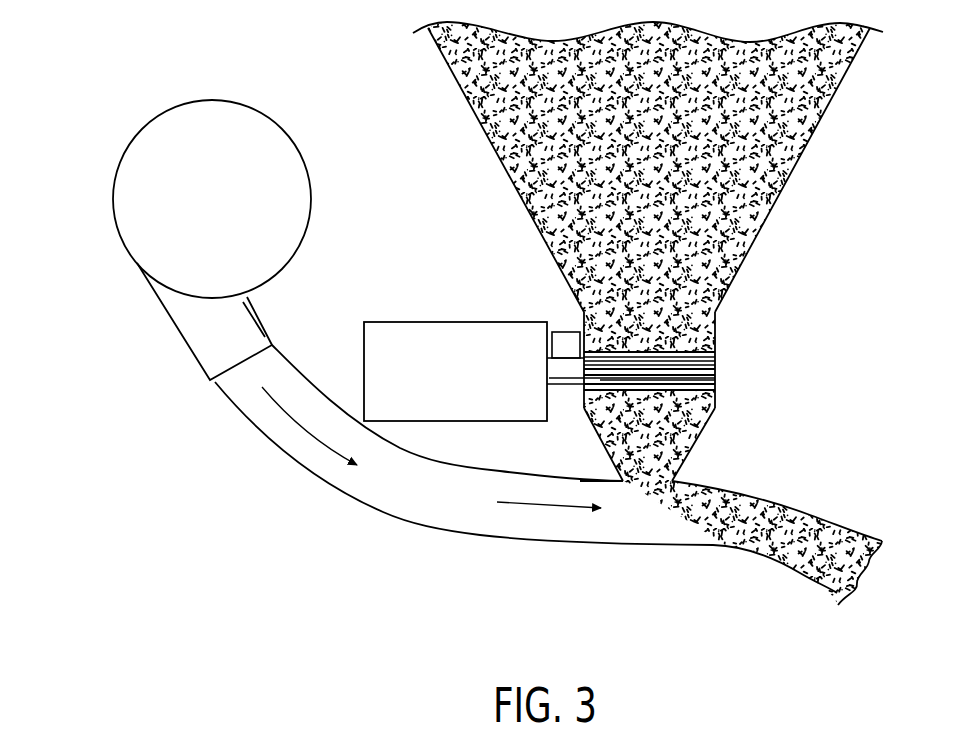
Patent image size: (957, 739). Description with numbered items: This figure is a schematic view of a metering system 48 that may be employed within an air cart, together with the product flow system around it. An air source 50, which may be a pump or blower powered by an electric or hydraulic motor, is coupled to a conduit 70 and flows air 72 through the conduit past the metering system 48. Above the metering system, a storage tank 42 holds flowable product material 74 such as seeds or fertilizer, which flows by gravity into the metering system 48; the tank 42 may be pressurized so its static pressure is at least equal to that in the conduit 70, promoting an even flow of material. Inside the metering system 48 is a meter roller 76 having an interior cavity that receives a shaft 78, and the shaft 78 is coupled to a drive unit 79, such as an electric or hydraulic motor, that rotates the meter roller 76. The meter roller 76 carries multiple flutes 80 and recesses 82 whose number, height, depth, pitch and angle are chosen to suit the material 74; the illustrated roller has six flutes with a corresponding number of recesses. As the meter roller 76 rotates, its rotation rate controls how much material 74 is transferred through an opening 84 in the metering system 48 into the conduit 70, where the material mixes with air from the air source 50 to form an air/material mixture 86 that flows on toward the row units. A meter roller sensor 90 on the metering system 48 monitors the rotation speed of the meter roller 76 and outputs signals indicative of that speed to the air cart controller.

The storage tank 42 is at (451, 70).
The metering system 48 is at (727, 339).
The air source 50 is at (208, 101).
The conduit 70 is at (383, 512).
The air flow 72 is at (300, 428).
The flowable product material 74 is at (813, 83).
The meter roller 76 is at (677, 395).
The shaft 78 is at (567, 385).
The drive unit 79 is at (460, 321).
The flutes 80 is at (685, 368).
The recesses 82 is at (706, 381).
The opening 84 is at (655, 478).
The air/material mixture 86 is at (778, 550).
The meter roller sensor 90 is at (563, 330).